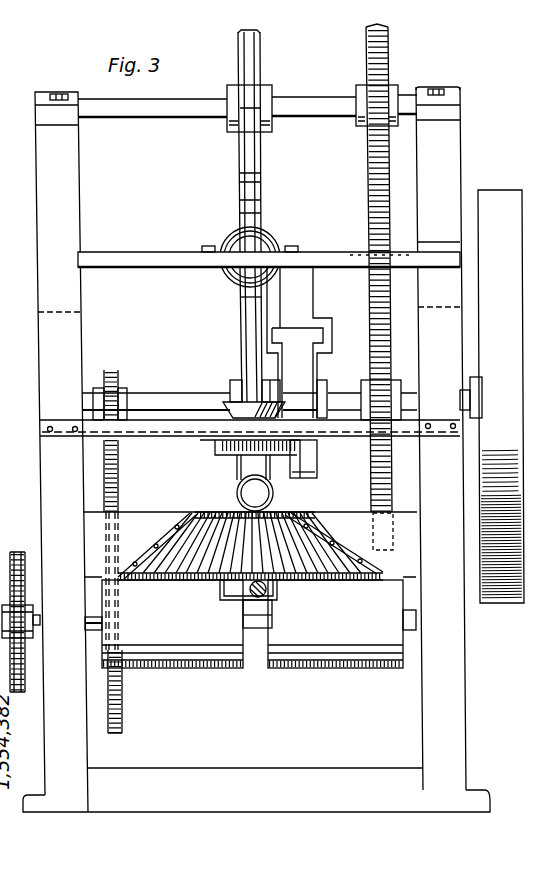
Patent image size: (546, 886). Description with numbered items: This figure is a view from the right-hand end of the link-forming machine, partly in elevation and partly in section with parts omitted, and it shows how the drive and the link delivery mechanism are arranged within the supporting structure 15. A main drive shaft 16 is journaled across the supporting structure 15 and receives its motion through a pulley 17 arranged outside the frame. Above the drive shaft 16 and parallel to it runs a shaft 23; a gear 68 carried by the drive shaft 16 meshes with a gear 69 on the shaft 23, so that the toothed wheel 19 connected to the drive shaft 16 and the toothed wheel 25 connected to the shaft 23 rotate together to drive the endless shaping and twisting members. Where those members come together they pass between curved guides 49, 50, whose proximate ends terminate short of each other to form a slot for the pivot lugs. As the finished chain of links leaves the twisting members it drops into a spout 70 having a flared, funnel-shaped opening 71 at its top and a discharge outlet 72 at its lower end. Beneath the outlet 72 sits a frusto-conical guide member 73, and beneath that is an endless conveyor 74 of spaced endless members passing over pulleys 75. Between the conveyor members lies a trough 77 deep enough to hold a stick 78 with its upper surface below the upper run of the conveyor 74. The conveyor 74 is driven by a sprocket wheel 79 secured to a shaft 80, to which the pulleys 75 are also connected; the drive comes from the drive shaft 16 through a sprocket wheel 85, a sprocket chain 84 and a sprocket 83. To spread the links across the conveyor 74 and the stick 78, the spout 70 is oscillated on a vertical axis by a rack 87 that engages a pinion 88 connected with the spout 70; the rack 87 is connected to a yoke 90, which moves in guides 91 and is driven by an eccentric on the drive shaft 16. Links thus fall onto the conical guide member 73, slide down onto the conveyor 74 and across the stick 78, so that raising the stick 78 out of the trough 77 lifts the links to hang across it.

The supporting structure 15 is at (40, 329).
The main drive shaft 16 is at (167, 390).
The pulley 17 is at (490, 190).
The toothed wheel 19 is at (245, 326).
The shaft 23 is at (154, 105).
The toothed wheel 25 is at (255, 60).
The guide 49 is at (232, 233).
The guide 50 is at (268, 231).
The gear 68 is at (378, 318).
The gear 69 is at (366, 182).
The spout 70 is at (239, 467).
The funnel shaped opening 71 is at (222, 401).
The discharge outlet 72 is at (237, 492).
The guide member 73 is at (306, 515).
The endless conveyor 74 is at (200, 583).
The pulley 75 is at (203, 650).
The trough 77 is at (273, 611).
The stick 78 is at (250, 596).
The sprocket wheel 79 is at (18, 693).
The shaft 80 is at (90, 630).
The sprocket 83 is at (123, 713).
The sprocket chain 84 is at (118, 491).
The sprocket wheel 85 is at (123, 386).
The rack 87 is at (297, 453).
The pinion 88 is at (215, 445).
The yoke 90 is at (318, 476).
The guides 91 is at (303, 306).